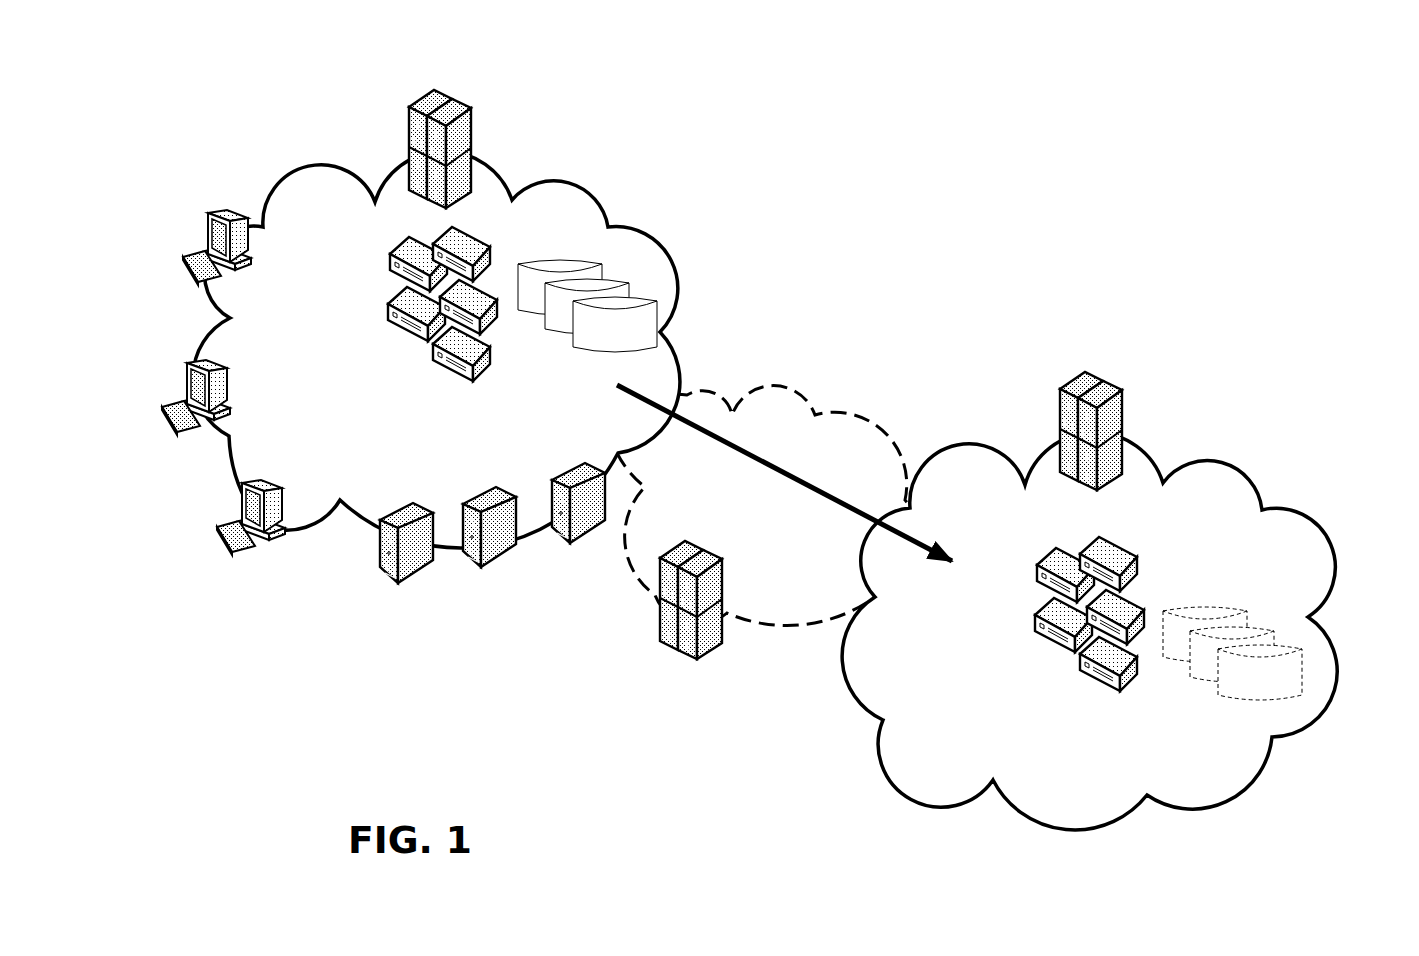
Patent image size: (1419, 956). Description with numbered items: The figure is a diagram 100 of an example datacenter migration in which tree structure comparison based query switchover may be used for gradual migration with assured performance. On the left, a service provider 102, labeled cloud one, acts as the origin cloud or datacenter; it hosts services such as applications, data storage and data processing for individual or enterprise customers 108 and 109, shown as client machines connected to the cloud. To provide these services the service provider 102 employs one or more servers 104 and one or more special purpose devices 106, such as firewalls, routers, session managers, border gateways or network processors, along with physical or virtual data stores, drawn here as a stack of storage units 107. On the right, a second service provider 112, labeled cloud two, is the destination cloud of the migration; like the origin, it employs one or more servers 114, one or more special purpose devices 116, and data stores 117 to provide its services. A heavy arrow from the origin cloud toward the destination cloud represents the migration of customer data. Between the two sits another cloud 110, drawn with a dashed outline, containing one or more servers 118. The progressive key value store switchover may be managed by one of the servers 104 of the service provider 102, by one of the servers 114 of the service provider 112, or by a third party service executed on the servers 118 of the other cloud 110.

The diagram 100 is at (1281, 106).
The service provider 102 is at (436, 349).
The servers 104 is at (453, 80).
The special purpose devices 106 is at (498, 254).
The storage devices of first cloud 107 is at (643, 272).
The customers 108 is at (222, 523).
The customers 109 is at (547, 477).
The another cloud 110 is at (811, 382).
The service provider 112 is at (1089, 631).
The servers 114 is at (1103, 365).
The special purpose devices 116 is at (1146, 557).
The storage devices of second cloud 117 is at (1233, 587).
The servers 118 is at (713, 666).